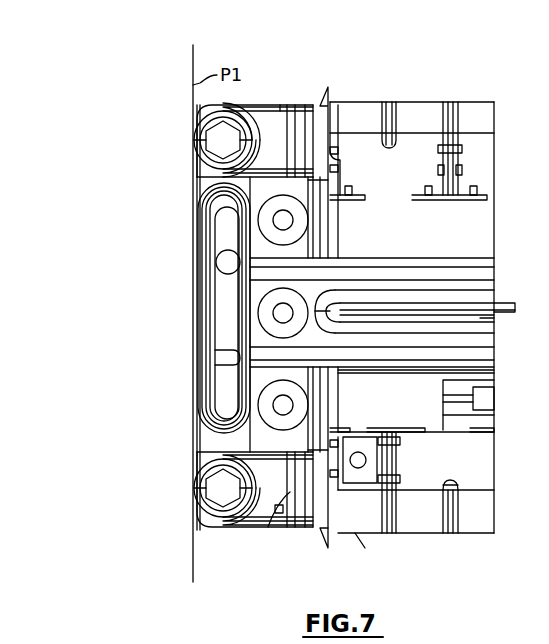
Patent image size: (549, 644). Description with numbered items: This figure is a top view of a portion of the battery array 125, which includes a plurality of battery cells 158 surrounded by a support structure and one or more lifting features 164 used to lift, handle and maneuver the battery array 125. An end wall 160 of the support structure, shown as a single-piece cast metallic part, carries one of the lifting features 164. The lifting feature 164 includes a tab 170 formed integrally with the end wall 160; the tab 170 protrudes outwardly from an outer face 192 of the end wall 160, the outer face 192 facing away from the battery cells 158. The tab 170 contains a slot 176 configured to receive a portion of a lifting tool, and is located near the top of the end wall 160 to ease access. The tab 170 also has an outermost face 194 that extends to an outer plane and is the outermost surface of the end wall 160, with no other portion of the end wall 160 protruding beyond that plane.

The battery array 125 is at (456, 78).
The battery cells 158 is at (378, 535).
The end wall 160 is at (216, 189).
The lifting feature 164 is at (208, 319).
The tab 170 is at (212, 370).
The slot 176 is at (223, 394).
The outer face 192 is at (270, 522).
The outermost face 194 is at (200, 271).